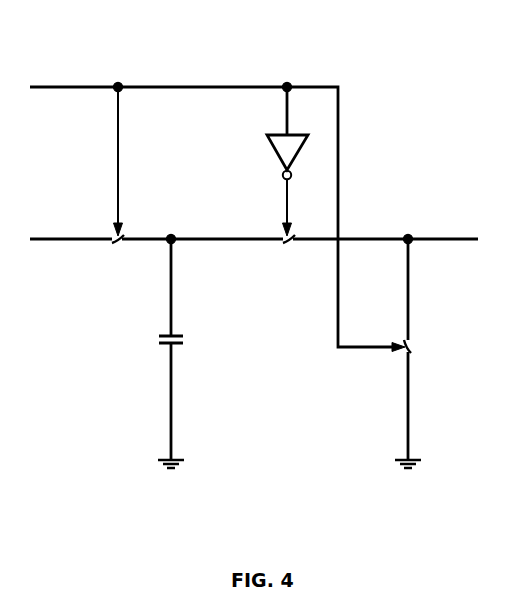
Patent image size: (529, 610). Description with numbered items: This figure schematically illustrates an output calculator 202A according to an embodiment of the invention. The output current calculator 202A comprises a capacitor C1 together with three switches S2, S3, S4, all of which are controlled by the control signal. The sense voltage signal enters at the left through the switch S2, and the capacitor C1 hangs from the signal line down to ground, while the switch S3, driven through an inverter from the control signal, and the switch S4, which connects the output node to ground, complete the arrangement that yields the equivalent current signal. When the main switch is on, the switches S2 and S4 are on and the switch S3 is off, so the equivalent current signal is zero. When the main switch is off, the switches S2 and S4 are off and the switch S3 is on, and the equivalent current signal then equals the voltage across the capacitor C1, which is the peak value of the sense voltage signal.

The output calculator 202A is at (445, 73).
The switch S2 is at (114, 178).
The switch S3 is at (287, 178).
The switch S4 is at (415, 353).
The capacitor C1 is at (183, 353).